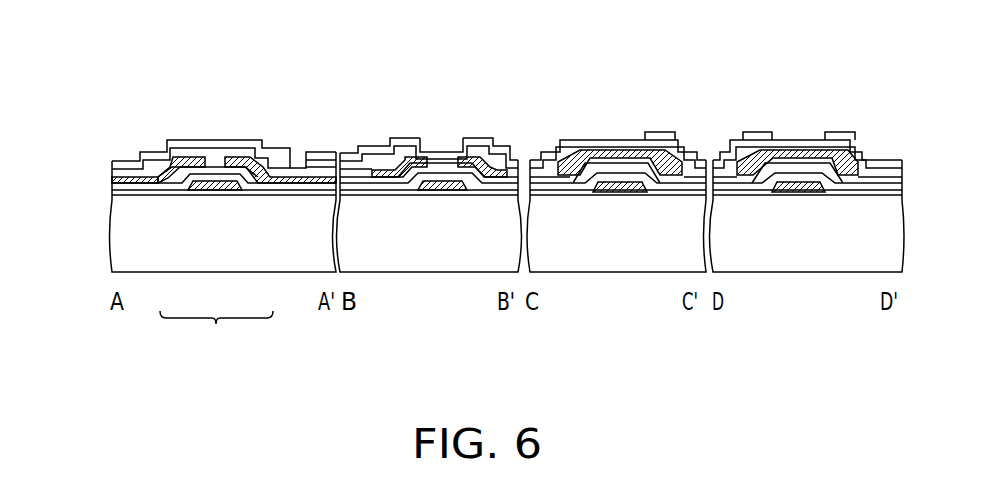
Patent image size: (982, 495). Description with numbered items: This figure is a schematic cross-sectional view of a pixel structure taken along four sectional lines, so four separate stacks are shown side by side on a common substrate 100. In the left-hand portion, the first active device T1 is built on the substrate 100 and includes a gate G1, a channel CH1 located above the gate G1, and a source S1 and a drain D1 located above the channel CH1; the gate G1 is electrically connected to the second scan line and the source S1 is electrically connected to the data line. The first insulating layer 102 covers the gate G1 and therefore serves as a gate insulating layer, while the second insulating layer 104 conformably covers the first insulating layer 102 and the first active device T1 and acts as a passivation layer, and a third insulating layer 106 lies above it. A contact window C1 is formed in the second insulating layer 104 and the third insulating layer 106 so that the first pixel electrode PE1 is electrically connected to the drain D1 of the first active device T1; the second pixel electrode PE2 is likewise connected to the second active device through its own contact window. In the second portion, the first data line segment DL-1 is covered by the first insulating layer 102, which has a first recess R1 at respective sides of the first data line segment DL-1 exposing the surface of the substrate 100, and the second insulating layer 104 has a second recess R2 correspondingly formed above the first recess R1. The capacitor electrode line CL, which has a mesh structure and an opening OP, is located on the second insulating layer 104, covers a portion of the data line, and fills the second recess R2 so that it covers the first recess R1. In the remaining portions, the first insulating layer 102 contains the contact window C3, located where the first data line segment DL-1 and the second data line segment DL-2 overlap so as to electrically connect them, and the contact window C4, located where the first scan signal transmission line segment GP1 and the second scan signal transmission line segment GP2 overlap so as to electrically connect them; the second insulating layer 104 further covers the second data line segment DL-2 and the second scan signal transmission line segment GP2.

The substrate 100 is at (125, 230).
The first insulating layer 102 is at (112, 191).
The second insulating layer 104 is at (112, 181).
The third insulating layer 106 is at (112, 170).
The source S1 is at (158, 185).
The channel CH1 is at (200, 168).
The gate G1 is at (222, 192).
The drain D1 is at (285, 182).
The first active device T1 is at (216, 335).
The contact window C1 is at (312, 158).
The first pixel electrode PE1 is at (280, 147).
The second pixel electrode PE2 is at (847, 137).
The first recess R1 is at (393, 178).
The second recess R2 is at (392, 153).
The capacitor electrode line CL is at (422, 158).
The opening OP is at (447, 158).
The first data line segment DL-1 is at (445, 192).
The second data line segment DL-2 is at (582, 182).
The contact window C3 is at (618, 152).
The contact window C4 is at (798, 153).
The first scan signal transmission line segment GP1 is at (800, 192).
The second scan signal transmission line segment GP2 is at (760, 182).